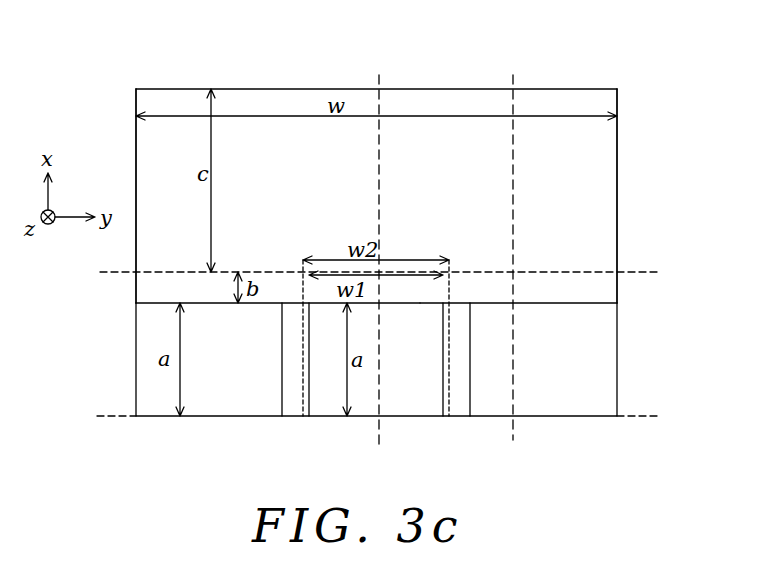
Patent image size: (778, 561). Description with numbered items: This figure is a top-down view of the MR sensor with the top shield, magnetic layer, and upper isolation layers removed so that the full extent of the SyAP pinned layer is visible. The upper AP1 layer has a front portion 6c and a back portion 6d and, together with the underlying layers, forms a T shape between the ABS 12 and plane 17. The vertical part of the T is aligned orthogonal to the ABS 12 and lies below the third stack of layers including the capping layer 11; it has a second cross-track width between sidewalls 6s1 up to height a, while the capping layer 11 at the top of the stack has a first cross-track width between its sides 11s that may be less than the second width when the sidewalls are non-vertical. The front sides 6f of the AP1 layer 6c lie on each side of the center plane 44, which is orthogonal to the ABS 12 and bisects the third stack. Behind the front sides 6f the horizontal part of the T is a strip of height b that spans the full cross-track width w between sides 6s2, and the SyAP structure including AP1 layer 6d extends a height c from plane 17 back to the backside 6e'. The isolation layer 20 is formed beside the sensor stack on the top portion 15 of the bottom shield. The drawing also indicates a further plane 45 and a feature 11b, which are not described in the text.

The backside 6e' is at (376, 67).
The sides 6s2 is at (136, 143).
The back portion of the upper AP1 layer 6d is at (146, 185).
The front sides 6f is at (158, 303).
The front portion of the upper AP1 layer 6c is at (600, 286).
The plane 17 is at (379, 270).
The top portion of a bottom shield 15 is at (152, 326).
The ABS 12 is at (375, 415).
The center plane 44 is at (375, 257).
The offset line 45 is at (512, 256).
The isolation layer 20 is at (292, 357).
The sidewalls on the AP1 layer 6s1 is at (303, 380).
The sides 11s is at (309, 390).
The capping layer 11 is at (410, 403).
The bottom surface of magnetic pole 11b is at (420, 303).